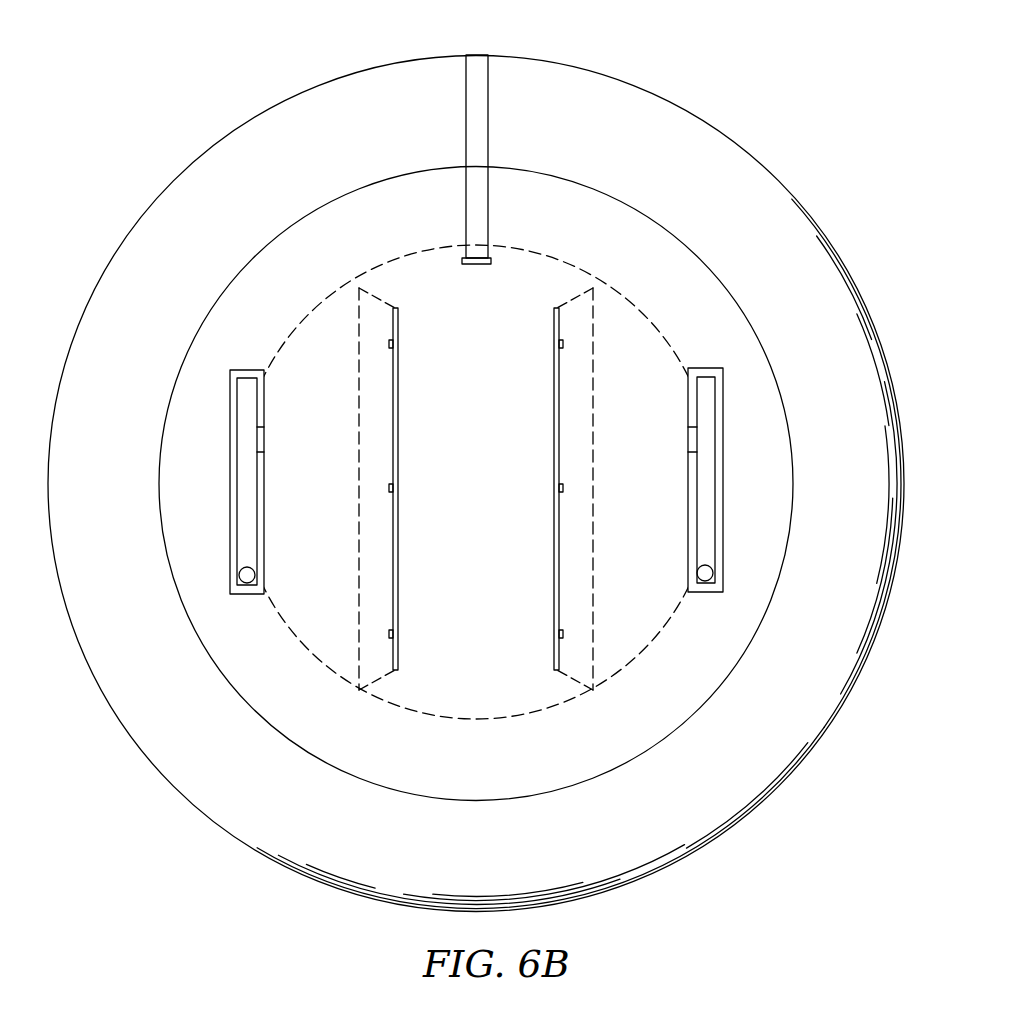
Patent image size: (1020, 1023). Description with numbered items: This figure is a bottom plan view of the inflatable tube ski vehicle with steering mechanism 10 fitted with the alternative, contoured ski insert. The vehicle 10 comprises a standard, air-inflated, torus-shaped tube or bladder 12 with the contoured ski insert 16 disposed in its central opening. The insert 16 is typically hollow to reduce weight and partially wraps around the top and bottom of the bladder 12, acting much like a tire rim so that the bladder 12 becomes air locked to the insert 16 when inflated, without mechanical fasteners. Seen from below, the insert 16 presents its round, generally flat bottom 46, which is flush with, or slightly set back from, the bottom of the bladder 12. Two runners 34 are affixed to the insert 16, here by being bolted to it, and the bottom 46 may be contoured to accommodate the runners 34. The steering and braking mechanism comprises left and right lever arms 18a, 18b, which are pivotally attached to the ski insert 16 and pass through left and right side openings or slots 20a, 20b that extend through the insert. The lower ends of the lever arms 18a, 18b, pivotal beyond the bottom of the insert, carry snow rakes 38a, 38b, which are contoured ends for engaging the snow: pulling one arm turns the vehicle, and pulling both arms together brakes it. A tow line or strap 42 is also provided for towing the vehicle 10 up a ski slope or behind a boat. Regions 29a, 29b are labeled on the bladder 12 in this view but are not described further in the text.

The inflatable tube ski vehicle with steering mechanism 10 is at (125, 160).
The tube or bladder 12 is at (776, 184).
The contoured ski insert 16 is at (465, 703).
The left lever arm 18a is at (703, 472).
The right lever arm 18b is at (248, 476).
The left side opening or slot 20a is at (688, 413).
The right side opening or slot 20b is at (264, 413).
The housing upper portion 29a is at (648, 99).
The housing lower portion 29b is at (638, 863).
The runners 34 is at (398, 593).
The snow rake 38a is at (700, 575).
The snow rake 38b is at (254, 572).
The tow line or strap 42 is at (488, 153).
The bottom 46 is at (642, 370).